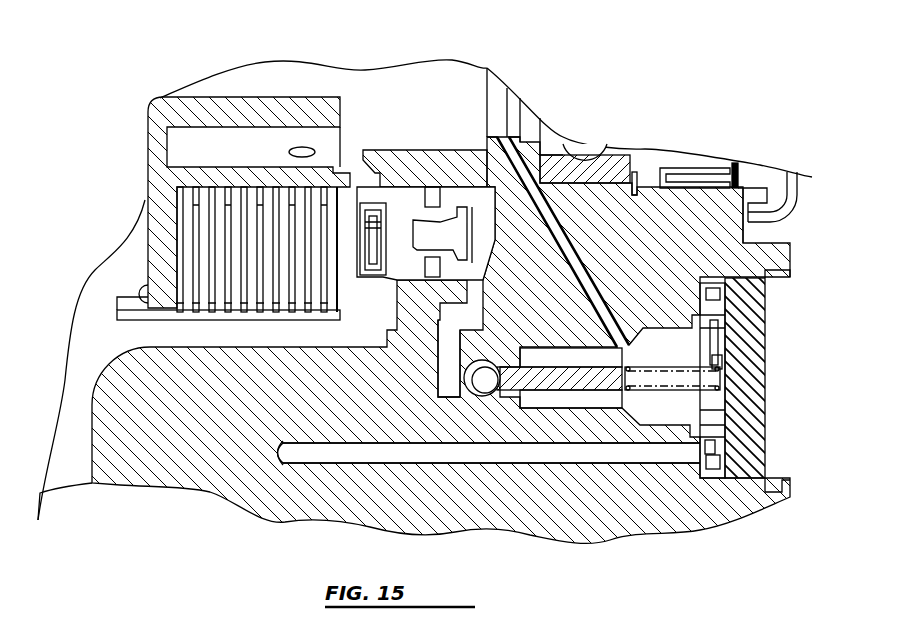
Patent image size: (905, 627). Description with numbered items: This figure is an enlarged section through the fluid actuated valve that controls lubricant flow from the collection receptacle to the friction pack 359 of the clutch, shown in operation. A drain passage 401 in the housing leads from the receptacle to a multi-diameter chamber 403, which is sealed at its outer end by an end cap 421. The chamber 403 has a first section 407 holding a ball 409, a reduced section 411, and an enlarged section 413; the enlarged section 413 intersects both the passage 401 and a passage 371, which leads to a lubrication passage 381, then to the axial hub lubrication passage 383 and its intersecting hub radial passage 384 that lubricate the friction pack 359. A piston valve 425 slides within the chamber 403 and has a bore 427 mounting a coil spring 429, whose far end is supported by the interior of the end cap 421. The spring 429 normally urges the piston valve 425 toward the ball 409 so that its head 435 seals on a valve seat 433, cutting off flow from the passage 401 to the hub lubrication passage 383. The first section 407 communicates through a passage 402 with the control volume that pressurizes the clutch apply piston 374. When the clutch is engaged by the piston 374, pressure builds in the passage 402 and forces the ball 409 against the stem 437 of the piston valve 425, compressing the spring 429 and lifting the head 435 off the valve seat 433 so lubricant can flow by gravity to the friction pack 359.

The friction pack 359 is at (195, 235).
The passage 371 is at (579, 243).
The clutch apply piston 374 is at (460, 197).
The lubrication passage 381 is at (420, 150).
The hub lubrication passage 383 is at (190, 167).
The hub radial passage 384 is at (300, 147).
The passage 401 is at (337, 458).
The passage 402 is at (490, 297).
The multi-diameter chamber 403 is at (662, 351).
The first section 407 is at (438, 378).
The ball 409 is at (473, 396).
The reduced section 411 is at (500, 385).
The enlarged section 413 is at (567, 400).
The end cap 421 is at (766, 416).
The piston valve 425 is at (610, 353).
The bore 427 is at (680, 387).
The coil spring 429 is at (714, 365).
The valve seat 433 is at (705, 428).
The piston valve head 435 is at (712, 325).
The stem 437 is at (540, 360).